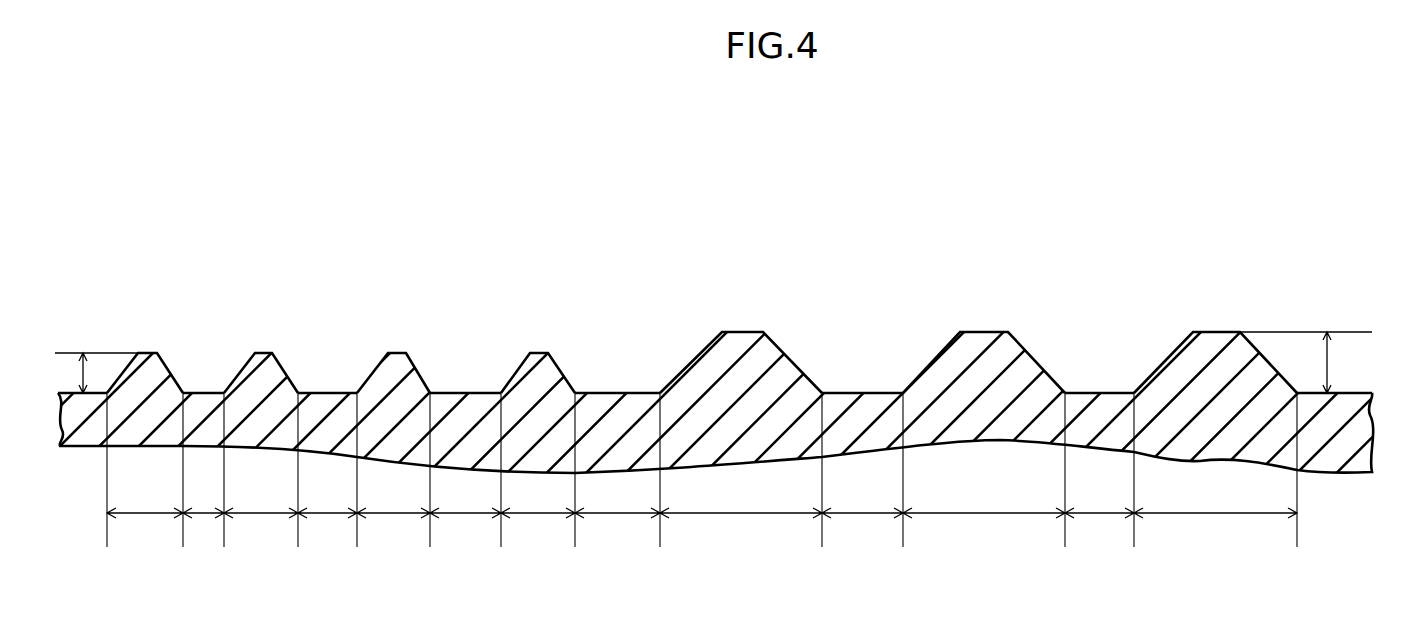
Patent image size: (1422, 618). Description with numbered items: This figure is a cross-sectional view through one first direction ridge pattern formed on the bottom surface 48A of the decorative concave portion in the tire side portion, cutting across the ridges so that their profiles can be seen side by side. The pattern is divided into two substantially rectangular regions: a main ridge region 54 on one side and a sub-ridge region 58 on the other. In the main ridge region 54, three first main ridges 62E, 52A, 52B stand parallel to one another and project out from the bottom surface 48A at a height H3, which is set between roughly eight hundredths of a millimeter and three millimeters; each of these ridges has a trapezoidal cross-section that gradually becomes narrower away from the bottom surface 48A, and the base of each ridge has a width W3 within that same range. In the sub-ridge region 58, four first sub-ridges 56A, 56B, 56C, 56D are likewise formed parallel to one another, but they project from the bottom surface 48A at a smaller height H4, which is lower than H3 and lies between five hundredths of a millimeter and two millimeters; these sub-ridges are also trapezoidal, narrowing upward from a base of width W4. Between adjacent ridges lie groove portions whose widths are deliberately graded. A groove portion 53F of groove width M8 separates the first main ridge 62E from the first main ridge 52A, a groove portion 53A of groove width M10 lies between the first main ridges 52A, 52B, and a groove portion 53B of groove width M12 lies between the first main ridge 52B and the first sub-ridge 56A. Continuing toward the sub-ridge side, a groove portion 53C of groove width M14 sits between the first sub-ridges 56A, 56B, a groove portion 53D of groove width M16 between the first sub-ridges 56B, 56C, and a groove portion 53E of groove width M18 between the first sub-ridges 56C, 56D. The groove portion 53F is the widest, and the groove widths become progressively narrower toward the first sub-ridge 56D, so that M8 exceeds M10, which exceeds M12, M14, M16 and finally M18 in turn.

The bottom surface 48A is at (1357, 392).
The sub-ridge region 58 is at (73, 263).
The main ridge region 54 is at (1302, 263).
The first sub-ridge 56A is at (533, 352).
The first sub-ridge 56B is at (393, 352).
The first sub-ridge 56C is at (258, 352).
The first sub-ridge 56D is at (143, 352).
The first main ridge 52A is at (988, 331).
The first main ridge 52B is at (742, 331).
The first main ridge 62E is at (1217, 331).
The groove portion 53A is at (862, 392).
The groove portion 53B is at (618, 392).
The groove portion 53C is at (465, 392).
The groove portion 53D is at (330, 392).
The groove portion 53E is at (203, 392).
The groove portion 53F is at (1100, 392).
The height H3 is at (1333, 362).
The height H4 is at (80, 372).
The width W3 is at (1214, 516).
The width W4 is at (542, 516).
The groove width M8 is at (1095, 516).
The groove width M10 is at (864, 516).
The groove width M12 is at (618, 516).
The groove width M14 is at (468, 516).
The groove width M16 is at (328, 516).
The groove width M18 is at (203, 516).